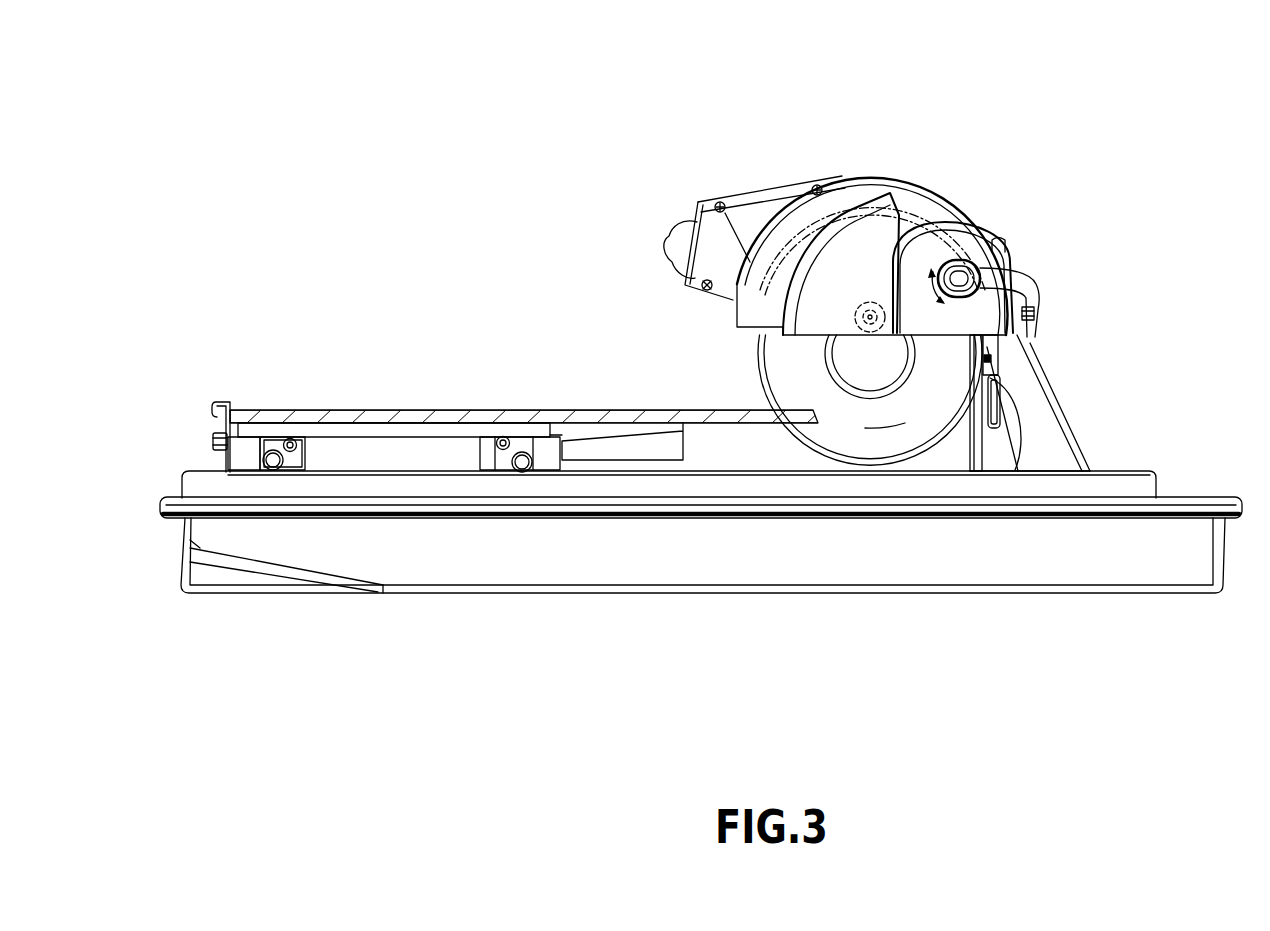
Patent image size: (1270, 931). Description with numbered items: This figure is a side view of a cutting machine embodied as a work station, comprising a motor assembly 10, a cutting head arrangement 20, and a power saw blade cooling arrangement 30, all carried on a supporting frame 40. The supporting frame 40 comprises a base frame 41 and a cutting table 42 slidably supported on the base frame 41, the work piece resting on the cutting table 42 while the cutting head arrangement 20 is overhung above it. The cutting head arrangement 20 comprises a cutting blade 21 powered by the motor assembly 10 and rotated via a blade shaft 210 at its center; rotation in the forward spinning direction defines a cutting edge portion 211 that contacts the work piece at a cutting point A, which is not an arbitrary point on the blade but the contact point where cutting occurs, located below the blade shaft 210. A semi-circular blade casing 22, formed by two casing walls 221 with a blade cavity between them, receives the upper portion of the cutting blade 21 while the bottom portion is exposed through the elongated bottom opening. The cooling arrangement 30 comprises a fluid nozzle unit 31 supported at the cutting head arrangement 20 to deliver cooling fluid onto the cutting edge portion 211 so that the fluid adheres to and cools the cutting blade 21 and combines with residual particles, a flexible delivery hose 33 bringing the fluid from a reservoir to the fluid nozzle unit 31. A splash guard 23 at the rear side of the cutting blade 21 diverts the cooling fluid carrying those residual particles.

The motor assembly 10 is at (740, 203).
The cutting head arrangement 20 is at (922, 126).
The cutting blade 21 is at (785, 360).
The blade casing 22 is at (857, 222).
The splash guard 23 is at (1010, 375).
The power saw blade cooling arrangement 30 is at (1069, 181).
The fluid nozzle unit 31 is at (953, 258).
The flexible delivery hose 33 is at (1013, 260).
The supporting frame 40 is at (585, 668).
The base frame 41 is at (537, 502).
The cutting table 42 is at (580, 430).
The blade shaft 210 is at (871, 313).
The cutting edge portion 211 is at (903, 445).
The casing walls 221 is at (803, 247).
The cutting point A is at (787, 405).